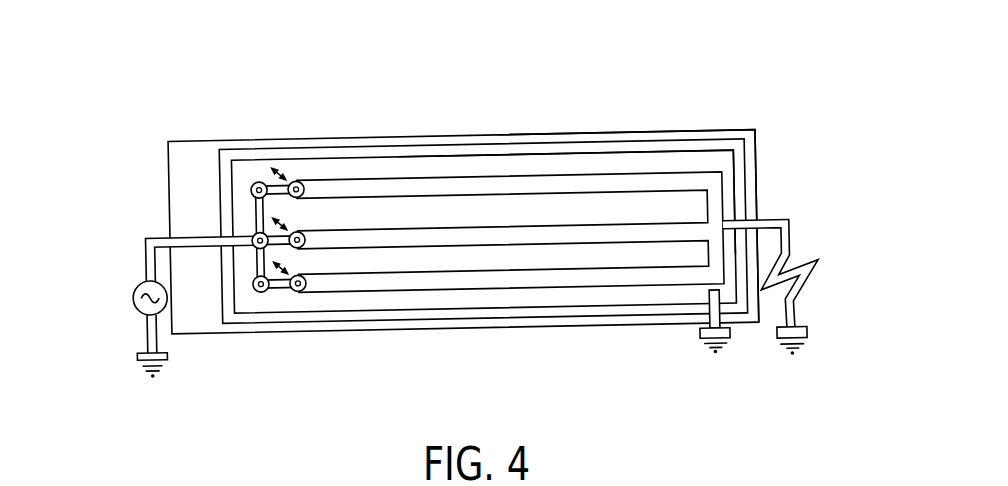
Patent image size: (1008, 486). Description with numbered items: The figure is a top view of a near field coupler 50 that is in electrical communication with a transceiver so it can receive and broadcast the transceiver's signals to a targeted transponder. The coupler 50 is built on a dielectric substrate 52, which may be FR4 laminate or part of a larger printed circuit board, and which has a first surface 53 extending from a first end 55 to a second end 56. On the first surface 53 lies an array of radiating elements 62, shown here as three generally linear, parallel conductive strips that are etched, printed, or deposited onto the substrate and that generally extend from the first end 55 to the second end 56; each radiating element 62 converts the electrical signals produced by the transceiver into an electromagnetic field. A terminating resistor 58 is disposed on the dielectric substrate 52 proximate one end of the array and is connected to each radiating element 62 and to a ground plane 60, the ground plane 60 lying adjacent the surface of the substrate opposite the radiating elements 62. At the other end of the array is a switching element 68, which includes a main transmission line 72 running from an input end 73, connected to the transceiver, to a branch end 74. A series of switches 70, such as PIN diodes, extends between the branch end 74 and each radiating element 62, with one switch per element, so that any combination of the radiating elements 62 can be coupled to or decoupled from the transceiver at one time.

The near field coupler 50 is at (708, 97).
The dielectric substrate 52 is at (555, 160).
The first surface 53 is at (720, 160).
The first end 55 is at (228, 299).
The second end 56 is at (724, 292).
The terminating resistor 58 is at (807, 263).
The ground plane 60 is at (639, 152).
The radiating elements 62 is at (459, 280).
The switching element 68 is at (208, 215).
The switches 70 is at (278, 244).
The main transmission line 72 is at (185, 243).
The input end 73 is at (108, 318).
The branch end 74 is at (257, 237).